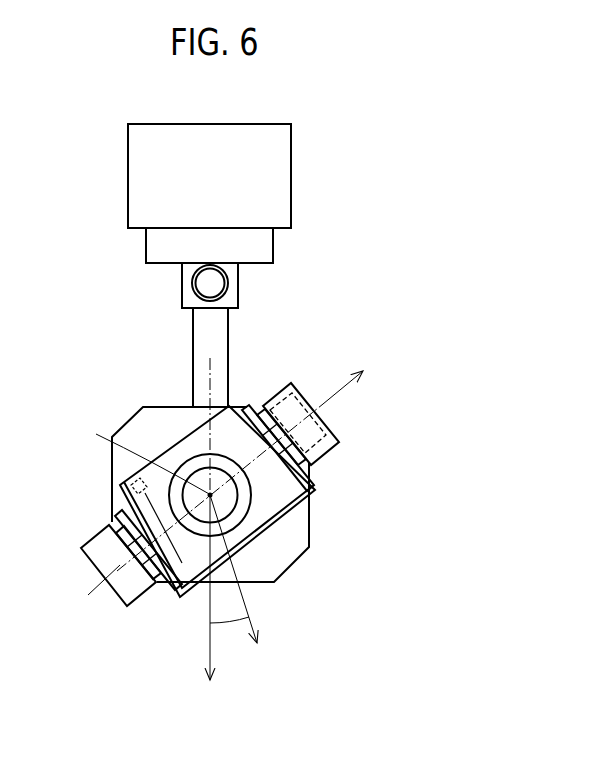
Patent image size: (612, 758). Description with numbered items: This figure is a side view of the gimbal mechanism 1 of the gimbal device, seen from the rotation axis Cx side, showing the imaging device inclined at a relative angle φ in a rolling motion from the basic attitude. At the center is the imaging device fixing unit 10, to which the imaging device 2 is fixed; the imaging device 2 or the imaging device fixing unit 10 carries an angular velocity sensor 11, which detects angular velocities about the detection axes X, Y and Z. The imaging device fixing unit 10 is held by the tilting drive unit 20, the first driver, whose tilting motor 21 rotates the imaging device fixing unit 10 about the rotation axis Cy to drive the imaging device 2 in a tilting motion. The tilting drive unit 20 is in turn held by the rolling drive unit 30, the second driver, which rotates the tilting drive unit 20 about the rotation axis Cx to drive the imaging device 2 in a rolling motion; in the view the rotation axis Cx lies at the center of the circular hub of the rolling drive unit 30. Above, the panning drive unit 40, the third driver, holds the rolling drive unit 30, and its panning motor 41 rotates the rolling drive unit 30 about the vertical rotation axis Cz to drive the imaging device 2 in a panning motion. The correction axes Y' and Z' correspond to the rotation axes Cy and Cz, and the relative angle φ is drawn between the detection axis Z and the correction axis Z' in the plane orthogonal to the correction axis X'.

The gimbal mechanism 1 is at (402, 326).
The imaging device 2 is at (182, 460).
The imaging device fixing unit 10 is at (257, 540).
The angular velocity sensor 11 is at (131, 484).
The tilting drive unit 20 is at (293, 382).
The tilting motor 21 is at (337, 445).
The rolling drive unit 30 is at (297, 555).
The panning drive unit 40 is at (285, 175).
The panning motor 41 is at (270, 245).